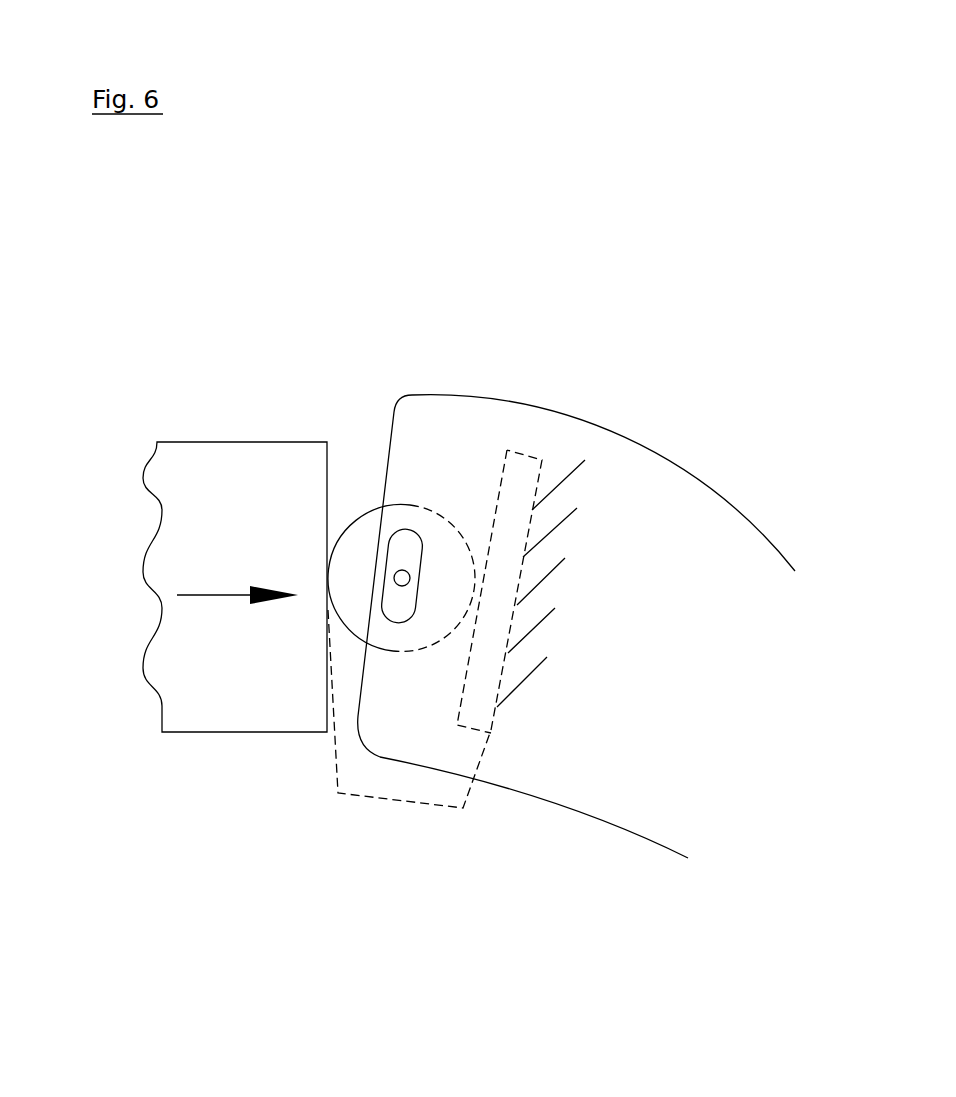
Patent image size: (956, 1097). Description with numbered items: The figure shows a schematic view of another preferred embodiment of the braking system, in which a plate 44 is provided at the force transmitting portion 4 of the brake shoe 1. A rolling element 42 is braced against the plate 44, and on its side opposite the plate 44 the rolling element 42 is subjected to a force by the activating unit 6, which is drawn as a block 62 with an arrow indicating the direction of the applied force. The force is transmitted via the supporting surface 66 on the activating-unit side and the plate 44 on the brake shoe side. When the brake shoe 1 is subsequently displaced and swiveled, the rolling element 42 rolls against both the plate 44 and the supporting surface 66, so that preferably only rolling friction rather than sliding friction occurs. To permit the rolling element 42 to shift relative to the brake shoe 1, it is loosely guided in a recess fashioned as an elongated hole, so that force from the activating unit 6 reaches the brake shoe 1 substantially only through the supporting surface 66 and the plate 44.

The brake shoe 1 is at (583, 770).
The force transmitting portion 4 is at (388, 802).
The activating unit 6 is at (173, 513).
The rolling element 42 is at (422, 523).
The plate 44 is at (513, 518).
The component body 62 is at (230, 472).
The supporting surface 66 is at (328, 507).